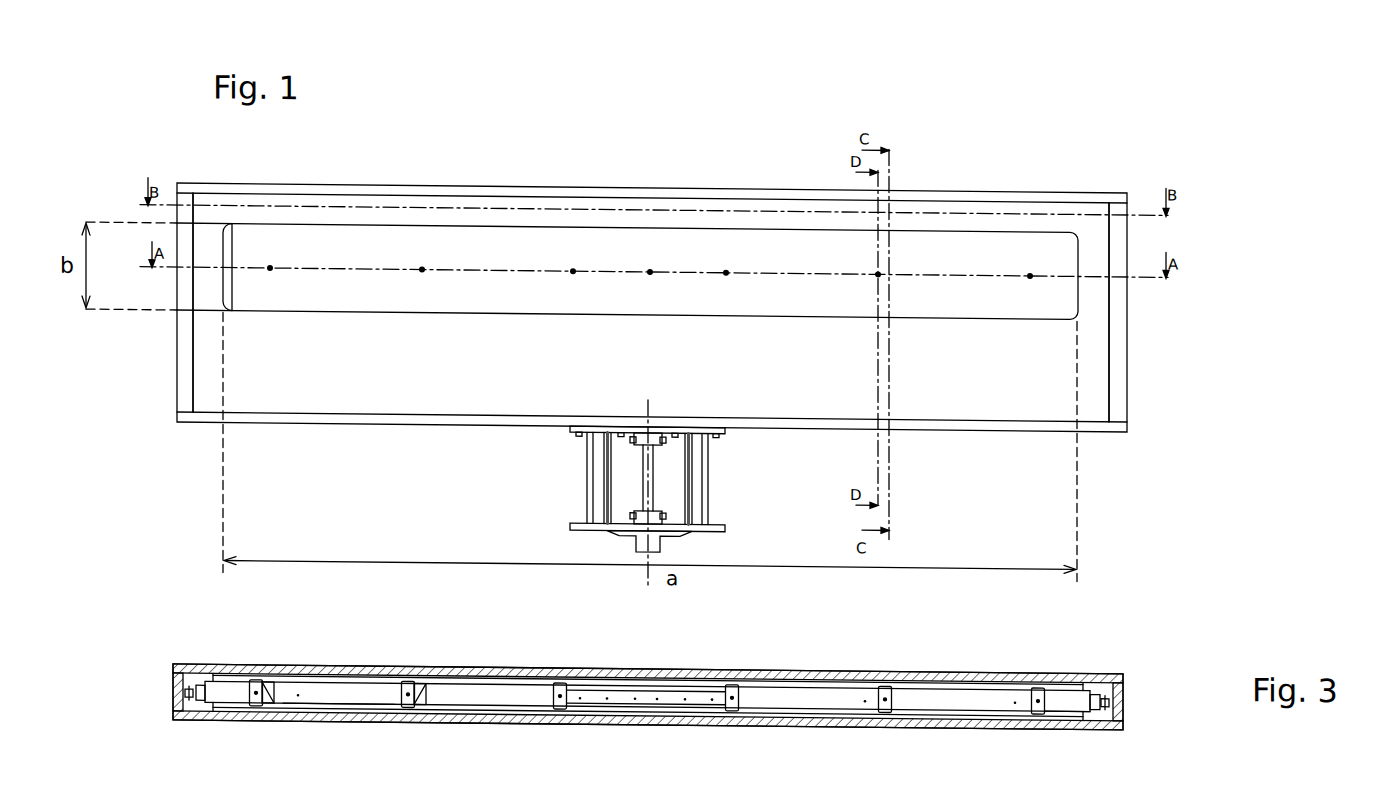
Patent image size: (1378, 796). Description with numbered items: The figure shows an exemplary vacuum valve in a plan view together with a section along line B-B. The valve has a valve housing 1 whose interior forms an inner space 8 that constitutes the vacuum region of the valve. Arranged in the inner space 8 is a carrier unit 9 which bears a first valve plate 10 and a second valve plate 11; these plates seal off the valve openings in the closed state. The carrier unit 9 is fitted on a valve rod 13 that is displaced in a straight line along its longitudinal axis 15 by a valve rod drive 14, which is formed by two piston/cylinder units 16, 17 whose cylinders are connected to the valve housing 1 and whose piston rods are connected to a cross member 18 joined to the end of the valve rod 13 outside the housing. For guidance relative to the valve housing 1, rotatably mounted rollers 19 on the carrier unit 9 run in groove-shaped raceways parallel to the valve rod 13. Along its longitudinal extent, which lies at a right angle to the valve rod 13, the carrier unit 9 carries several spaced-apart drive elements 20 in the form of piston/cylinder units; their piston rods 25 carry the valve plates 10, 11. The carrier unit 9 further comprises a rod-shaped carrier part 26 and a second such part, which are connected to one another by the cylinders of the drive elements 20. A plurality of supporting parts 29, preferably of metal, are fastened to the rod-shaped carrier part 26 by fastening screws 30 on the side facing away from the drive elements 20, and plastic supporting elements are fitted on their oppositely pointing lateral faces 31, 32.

In FIG. 1, the valve housing 1 is at (1095, 375).
In FIG. 3, the valve housing 1 is at (1055, 661).
In FIG. 3, the inner space 8 is at (195, 676).
In FIG. 3, the carrier unit 9 is at (208, 705).
In FIG. 3, the first valve plate 10 is at (787, 675).
In FIG. 1, the second valve plate 11 is at (615, 238).
In FIG. 3, the second valve plate 11 is at (790, 707).
In FIG. 1, the valve rod 13 is at (645, 457).
In FIG. 1, the valve rod drive 14 is at (585, 488).
In FIG. 1, the longitudinal axis 15 is at (648, 498).
In FIG. 1, the piston/cylinder unit 16 is at (602, 502).
In FIG. 1, the piston/cylinder unit 17 is at (702, 476).
In FIG. 1, the cross member 18 is at (675, 522).
In FIG. 3, the roller 19 is at (182, 693).
In FIG. 3, the drive element 20 is at (393, 749).
In FIG. 3, the piston rod 25 is at (1067, 753).
In FIG. 3, the first rod-shaped carrier part 26 is at (330, 691).
In FIG. 3, the supporting part 29 is at (255, 702).
In FIG. 3, the fastening screw 30 is at (568, 686).
In FIG. 3, the lateral face 31 is at (262, 672).
In FIG. 3, the lateral face 32 is at (413, 704).